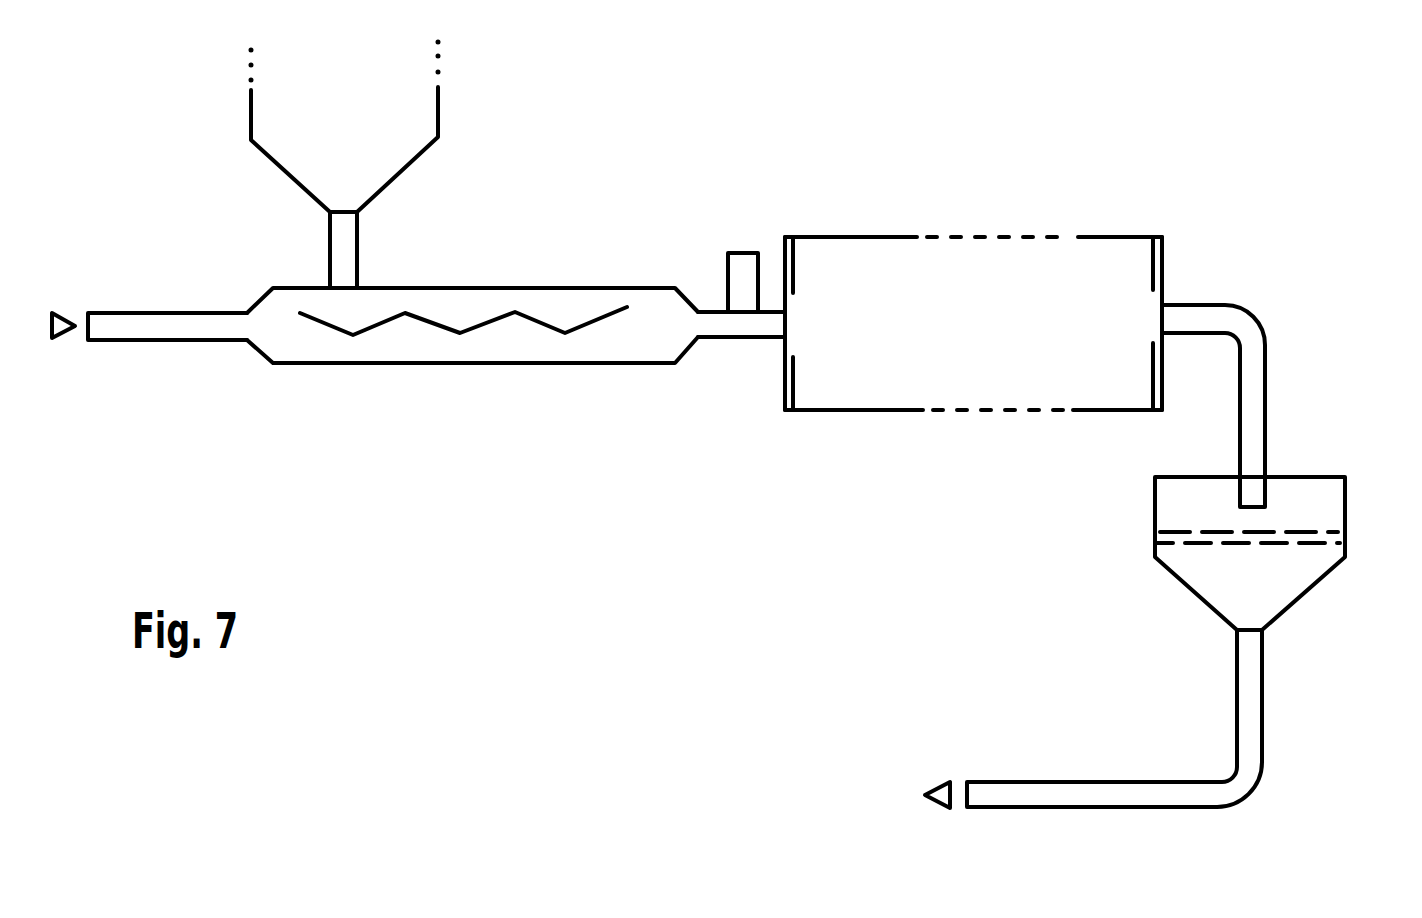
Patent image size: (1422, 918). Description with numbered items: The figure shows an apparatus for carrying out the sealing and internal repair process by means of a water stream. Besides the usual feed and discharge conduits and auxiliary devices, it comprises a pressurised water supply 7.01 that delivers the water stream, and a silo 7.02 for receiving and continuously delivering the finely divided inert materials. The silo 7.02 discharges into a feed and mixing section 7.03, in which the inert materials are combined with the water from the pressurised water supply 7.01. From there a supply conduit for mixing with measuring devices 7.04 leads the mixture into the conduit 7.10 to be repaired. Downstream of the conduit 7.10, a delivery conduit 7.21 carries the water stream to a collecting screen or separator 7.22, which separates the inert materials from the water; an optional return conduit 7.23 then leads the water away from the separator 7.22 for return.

The pressurised water supply 7.01 is at (157, 340).
The silo 7.02 is at (275, 113).
The feed and mixing section 7.03 is at (477, 363).
The supply conduit for mixing with measuring devices 7.04 is at (742, 337).
The conduit to be repaired 7.10 is at (863, 242).
The delivery conduit 7.21 is at (1265, 355).
The collecting screen or separator 7.22 is at (1317, 578).
The return conduit 7.23 is at (1057, 782).